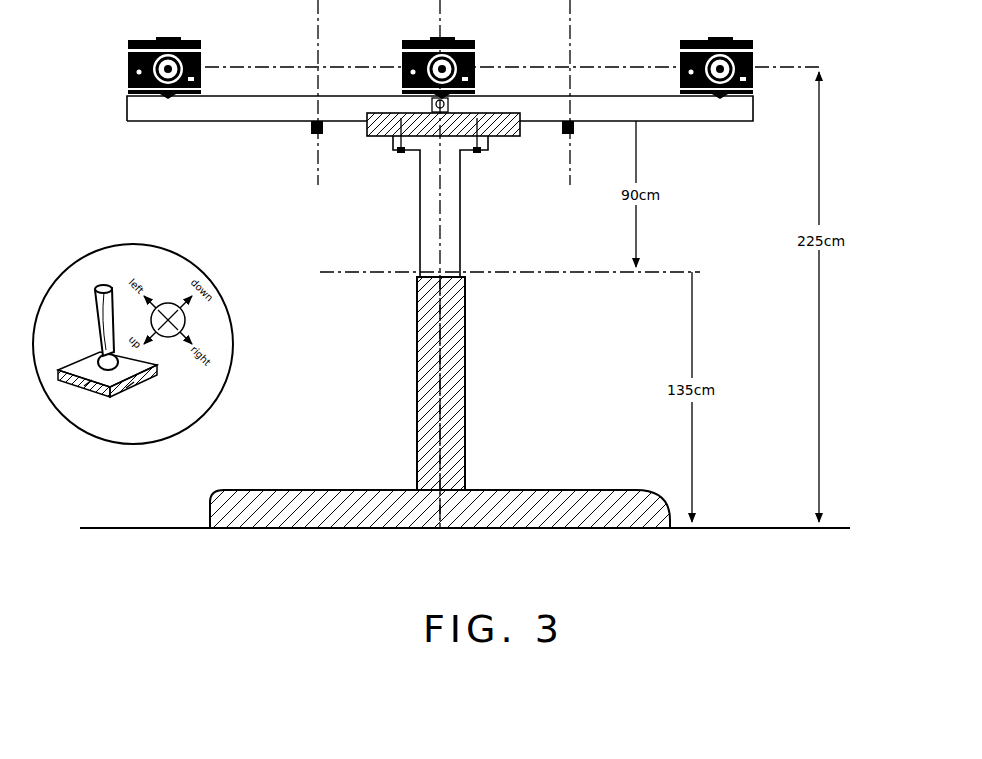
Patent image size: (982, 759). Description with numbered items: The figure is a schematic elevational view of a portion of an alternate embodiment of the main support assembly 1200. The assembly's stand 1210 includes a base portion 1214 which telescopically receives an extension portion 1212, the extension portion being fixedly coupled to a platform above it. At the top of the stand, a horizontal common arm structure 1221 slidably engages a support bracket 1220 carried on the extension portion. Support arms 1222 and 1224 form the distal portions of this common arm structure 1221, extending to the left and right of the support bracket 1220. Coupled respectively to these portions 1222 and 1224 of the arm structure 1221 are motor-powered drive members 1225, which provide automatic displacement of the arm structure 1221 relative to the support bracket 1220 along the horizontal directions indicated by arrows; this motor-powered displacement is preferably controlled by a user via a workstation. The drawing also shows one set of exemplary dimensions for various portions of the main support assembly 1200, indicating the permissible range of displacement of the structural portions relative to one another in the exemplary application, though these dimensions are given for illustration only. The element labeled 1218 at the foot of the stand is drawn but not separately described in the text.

The main support assembly 1200 is at (372, 324).
The stand 1210 is at (453, 312).
The extension portion 1212 is at (432, 228).
The base portion 1214 is at (455, 435).
The base 1218 is at (580, 490).
The support bracket 1220 is at (503, 128).
The common arm structure 1221 is at (358, 105).
The support arm 1222 is at (170, 108).
The support arm 1224 is at (693, 110).
The motor-powered drive members 1225 is at (314, 136).